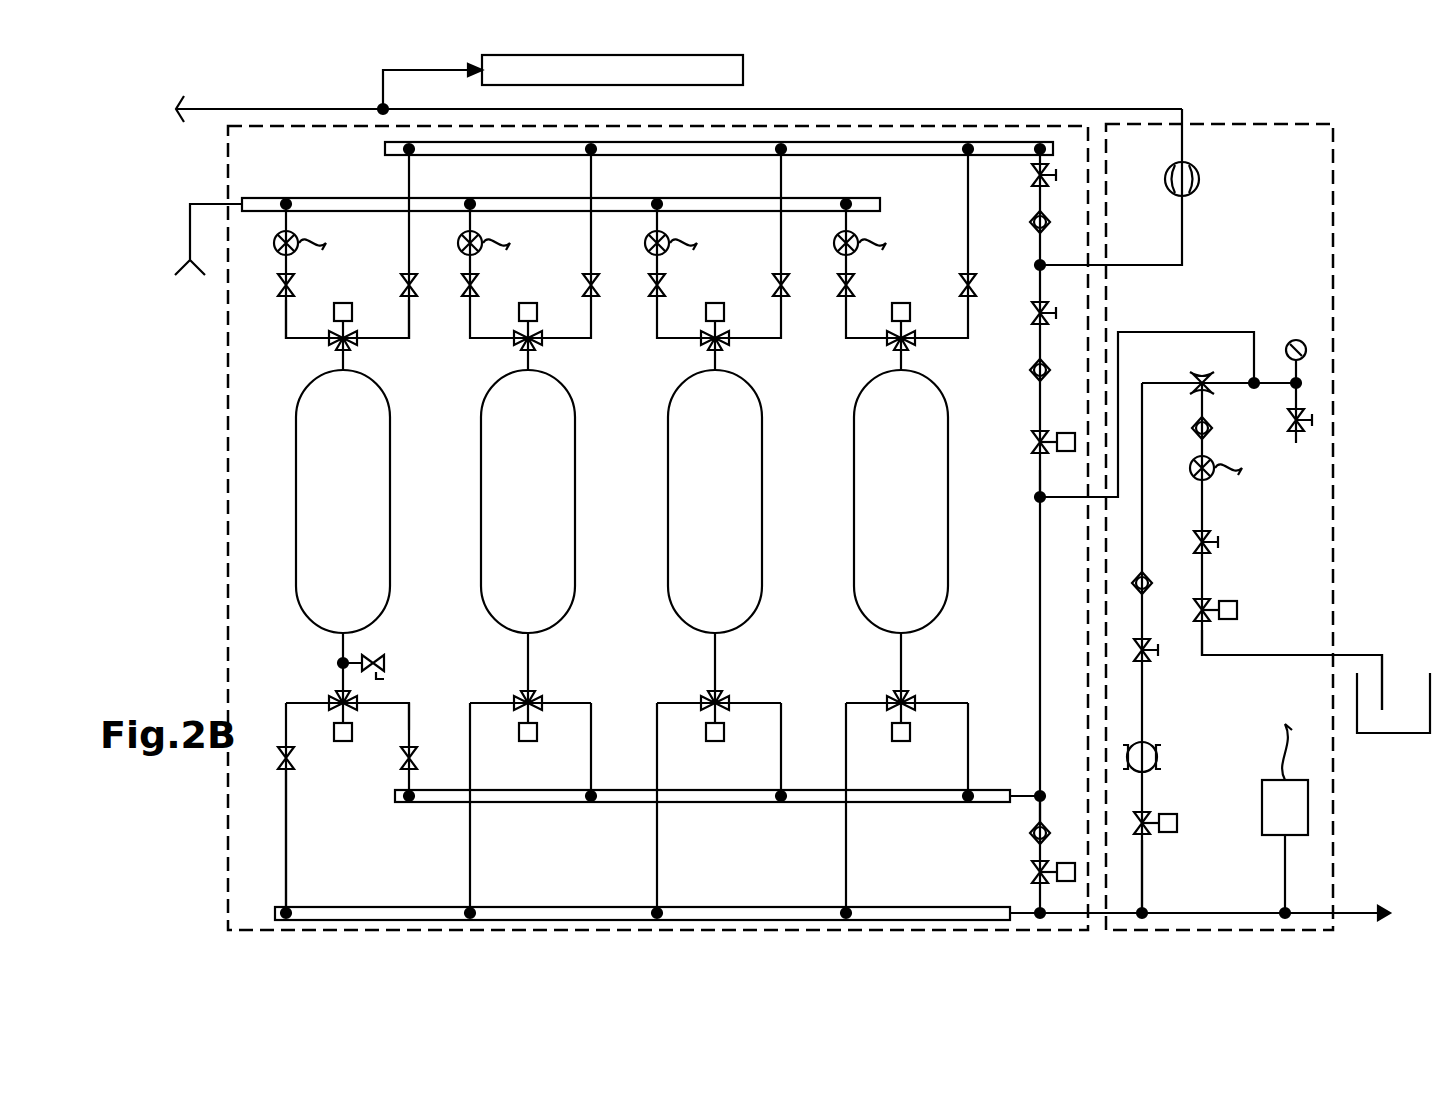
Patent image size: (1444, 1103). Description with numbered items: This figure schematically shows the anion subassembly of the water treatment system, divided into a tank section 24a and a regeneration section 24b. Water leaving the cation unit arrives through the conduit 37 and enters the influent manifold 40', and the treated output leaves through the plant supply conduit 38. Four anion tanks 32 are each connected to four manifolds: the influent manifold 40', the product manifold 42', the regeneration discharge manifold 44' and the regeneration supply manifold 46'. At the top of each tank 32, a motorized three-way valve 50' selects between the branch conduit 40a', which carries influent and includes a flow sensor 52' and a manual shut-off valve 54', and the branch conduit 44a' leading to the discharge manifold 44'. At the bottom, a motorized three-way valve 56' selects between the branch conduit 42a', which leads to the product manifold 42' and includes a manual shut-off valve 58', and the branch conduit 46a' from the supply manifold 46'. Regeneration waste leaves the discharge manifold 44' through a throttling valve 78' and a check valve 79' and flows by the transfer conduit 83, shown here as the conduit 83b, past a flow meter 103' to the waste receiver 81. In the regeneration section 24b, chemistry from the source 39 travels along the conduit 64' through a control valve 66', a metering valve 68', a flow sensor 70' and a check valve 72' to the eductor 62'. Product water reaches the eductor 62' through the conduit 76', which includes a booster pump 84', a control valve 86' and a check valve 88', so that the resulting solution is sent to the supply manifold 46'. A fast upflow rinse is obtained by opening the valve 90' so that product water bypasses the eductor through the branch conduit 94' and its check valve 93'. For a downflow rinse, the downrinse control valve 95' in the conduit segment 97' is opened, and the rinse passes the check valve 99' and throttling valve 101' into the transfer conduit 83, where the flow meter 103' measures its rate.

The transfer conduit 83 is at (383, 78).
The waste receiver 81 is at (745, 72).
The transfer conduit 83b is at (830, 108).
The tank section 24a is at (920, 125).
The regeneration section 24b is at (1335, 250).
The regeneration discharge manifold 44' is at (719, 165).
The influent manifold 40' is at (561, 178).
The regeneration supply manifold 46' is at (702, 822).
The product manifold 42' is at (642, 894).
The conduit 37 is at (190, 238).
The flow sensor 52' is at (562, 234).
The manual shut-off valve 54' is at (609, 292).
The motorized three-way valve 50' is at (638, 308).
The branch conduit 40a' is at (286, 341).
The branch conduit 44a' is at (409, 344).
The anion tank 32 is at (916, 530).
The motorized three-way valve 56' is at (638, 735).
The manual shut-off valve 58' is at (357, 720).
The branch conduit 46a' is at (420, 692).
The branch conduit 42a' is at (331, 841).
The throttling valve 78' is at (1019, 185).
The check valve 79' is at (1017, 228).
The throttling valve 101' is at (1020, 299).
The check valve 99' is at (1012, 377).
The downrinse control valve 95' is at (1057, 420).
The conduit segment 97' is at (1045, 478).
The check valve 93' is at (1057, 796).
The branch conduit 94' is at (992, 826).
The valve 90' is at (1114, 882).
The flow meter 103' is at (1223, 172).
The eductor 62' is at (1178, 343).
The check valve 72' is at (1231, 419).
The flow sensor 70' is at (1230, 452).
The check valve 88' is at (1160, 548).
The metering valve 68' is at (1240, 524).
The control valve 66' is at (1246, 588).
The conduit 64' is at (1292, 657).
The control valve 86' is at (1185, 736).
The booster pump 84' is at (1178, 749).
The conduit 76' is at (1186, 876).
The plant supply conduit 38 is at (1355, 908).
The source of regeneration chemistry 39 is at (1405, 642).